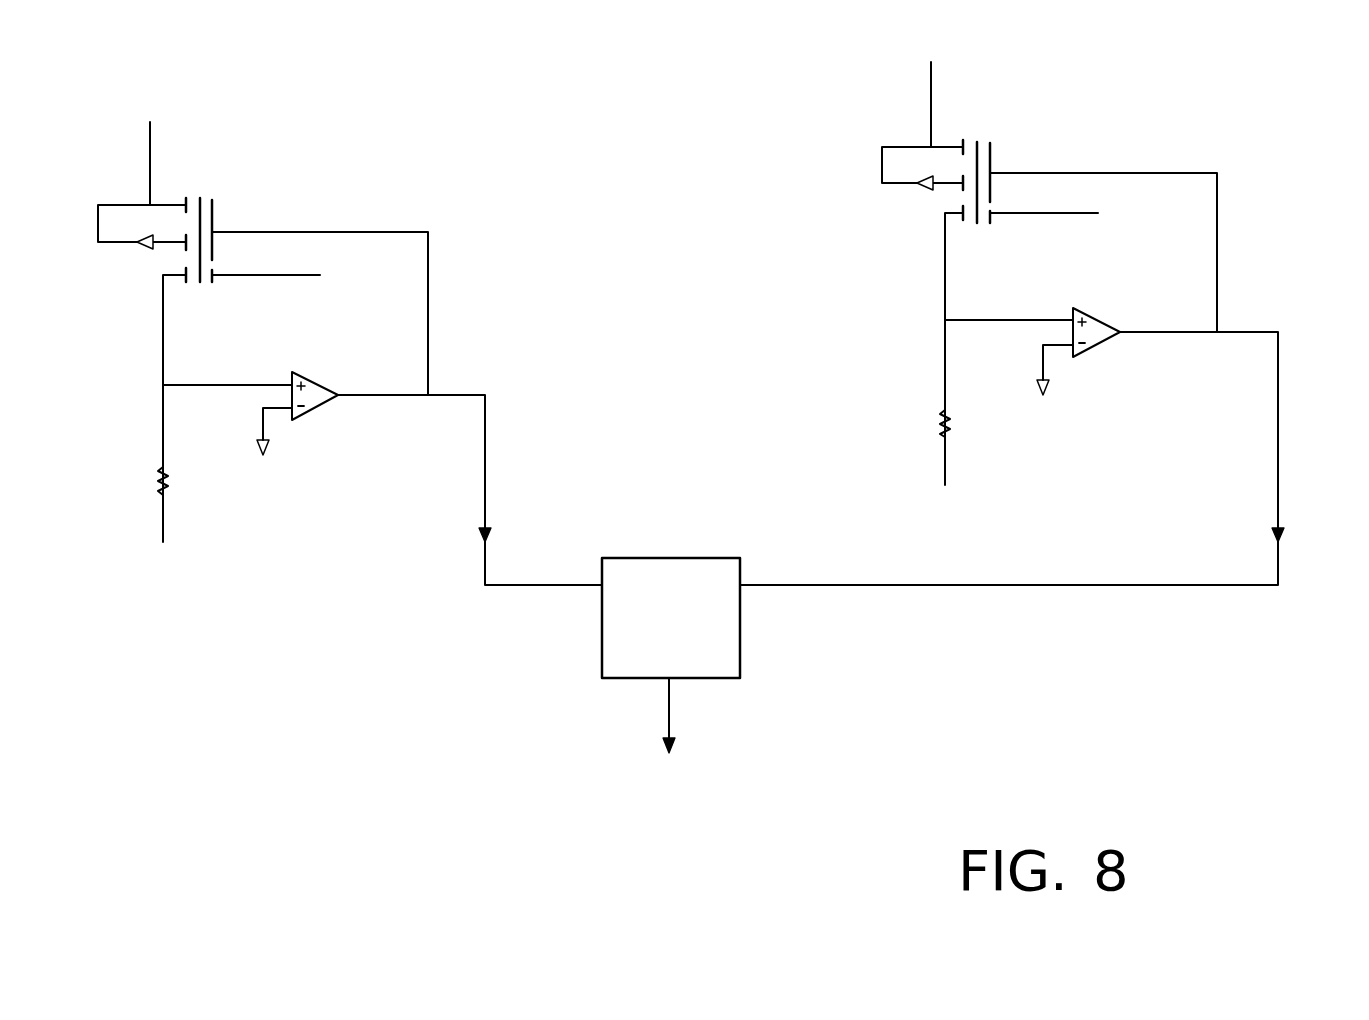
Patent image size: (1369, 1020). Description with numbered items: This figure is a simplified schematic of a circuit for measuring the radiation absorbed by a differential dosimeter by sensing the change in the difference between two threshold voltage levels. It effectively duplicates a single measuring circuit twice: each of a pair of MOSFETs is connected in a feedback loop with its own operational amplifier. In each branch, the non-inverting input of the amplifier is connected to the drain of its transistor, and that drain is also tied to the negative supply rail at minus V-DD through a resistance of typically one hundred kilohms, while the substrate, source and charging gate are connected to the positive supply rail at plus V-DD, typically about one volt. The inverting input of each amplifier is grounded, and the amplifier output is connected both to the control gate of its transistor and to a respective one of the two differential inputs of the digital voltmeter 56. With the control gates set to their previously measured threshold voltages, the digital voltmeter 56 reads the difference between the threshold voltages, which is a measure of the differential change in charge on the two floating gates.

The digital voltmeter 56 is at (718, 679).